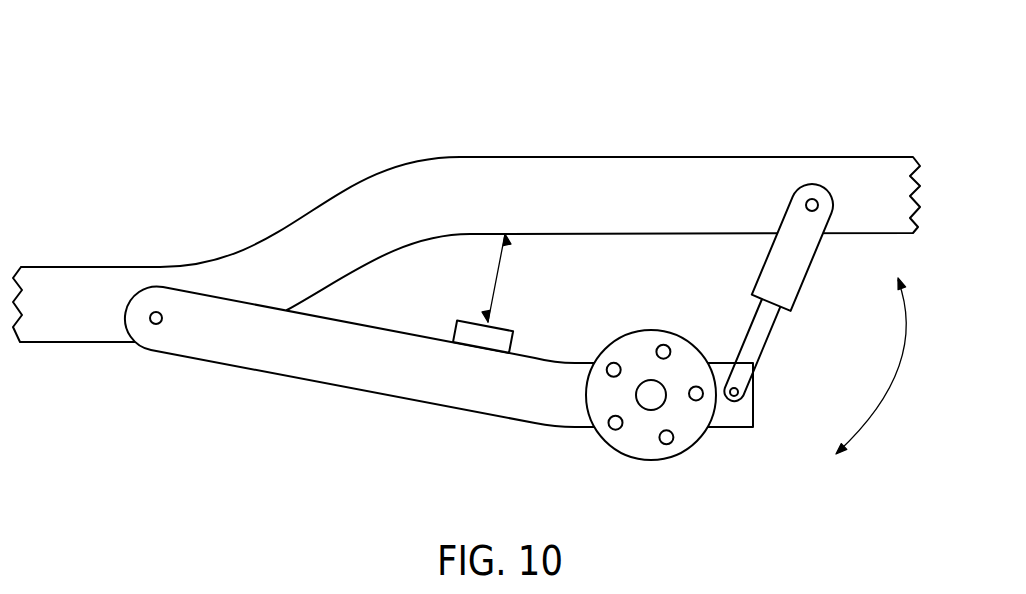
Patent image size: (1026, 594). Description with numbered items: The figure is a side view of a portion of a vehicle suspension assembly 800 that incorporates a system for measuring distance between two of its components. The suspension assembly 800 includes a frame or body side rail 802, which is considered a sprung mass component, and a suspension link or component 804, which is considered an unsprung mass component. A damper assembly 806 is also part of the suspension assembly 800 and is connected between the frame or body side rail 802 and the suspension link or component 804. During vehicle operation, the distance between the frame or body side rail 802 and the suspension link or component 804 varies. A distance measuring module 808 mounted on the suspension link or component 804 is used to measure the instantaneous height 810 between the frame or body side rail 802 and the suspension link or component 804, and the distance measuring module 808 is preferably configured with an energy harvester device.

The vehicle suspension assembly 800 is at (466, 242).
The frame or body side rail 802 is at (672, 157).
The suspension link or component 804 is at (335, 384).
The damper assembly 806 is at (800, 288).
The distance measuring module 808 is at (513, 341).
The instantaneous height 810 is at (497, 282).